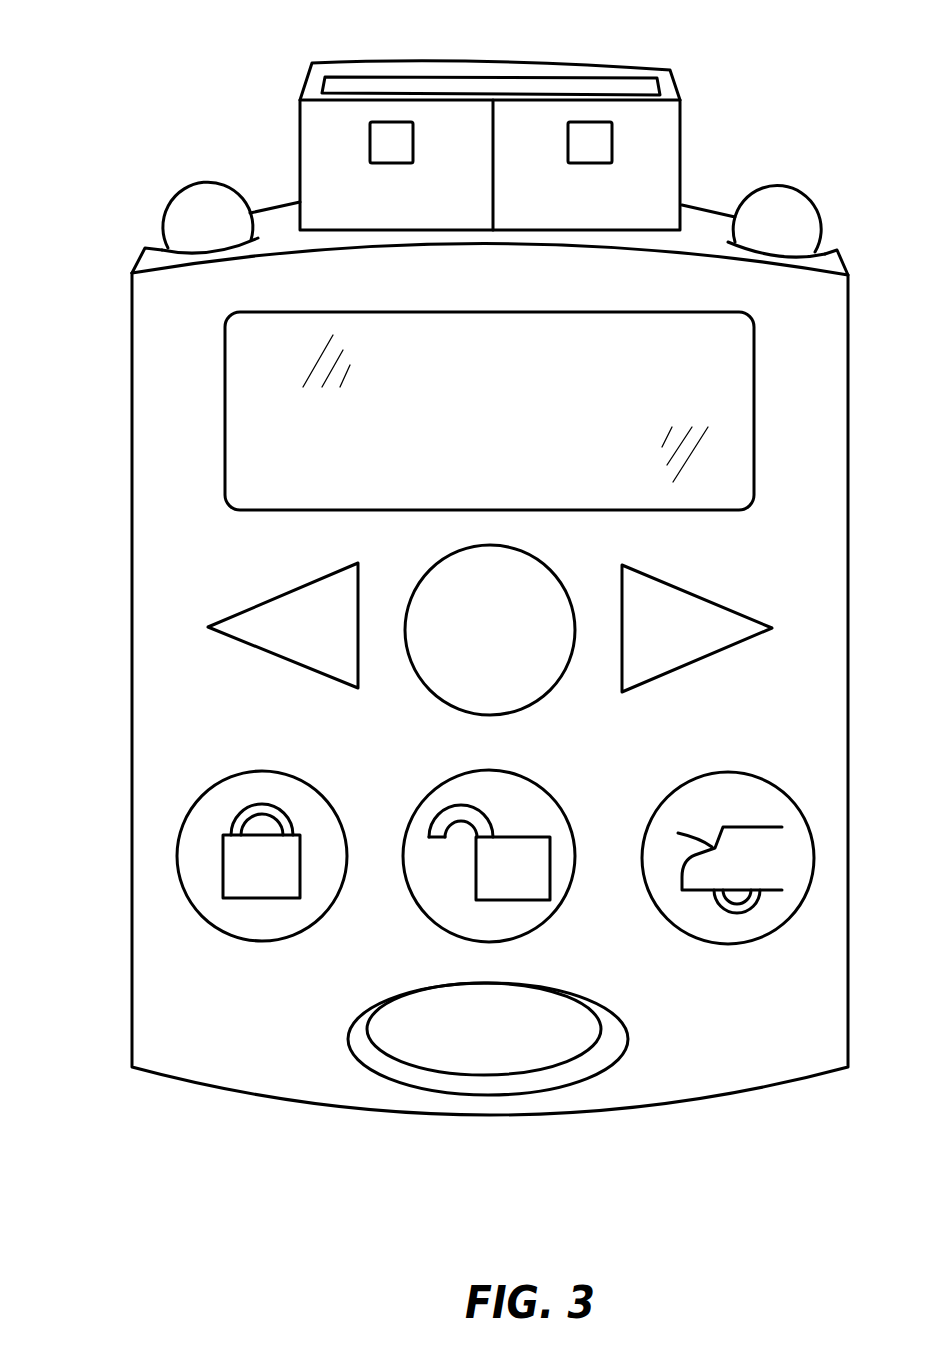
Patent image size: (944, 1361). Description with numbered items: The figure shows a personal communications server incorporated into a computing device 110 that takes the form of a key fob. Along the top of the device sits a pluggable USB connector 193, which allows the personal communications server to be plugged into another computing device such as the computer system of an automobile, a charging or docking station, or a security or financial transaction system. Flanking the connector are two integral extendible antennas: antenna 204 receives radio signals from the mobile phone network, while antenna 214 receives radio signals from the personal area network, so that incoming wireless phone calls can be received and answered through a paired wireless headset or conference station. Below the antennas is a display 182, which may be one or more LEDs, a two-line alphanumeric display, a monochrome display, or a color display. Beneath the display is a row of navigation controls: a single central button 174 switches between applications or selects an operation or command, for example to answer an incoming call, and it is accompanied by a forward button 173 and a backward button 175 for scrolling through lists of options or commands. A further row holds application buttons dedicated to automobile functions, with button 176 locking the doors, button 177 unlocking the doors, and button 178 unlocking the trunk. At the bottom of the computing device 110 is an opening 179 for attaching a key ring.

The computing device 110 is at (277, 1126).
The USB connector 193 is at (312, 63).
The antenna 204 is at (183, 182).
The antenna 214 is at (803, 187).
The display 182 is at (213, 407).
The forward button 173 is at (262, 596).
The button 174 is at (422, 567).
The backward button 175 is at (712, 585).
The button 176 is at (263, 763).
The button 177 is at (425, 787).
The button 178 is at (659, 795).
The opening 179 is at (340, 1023).